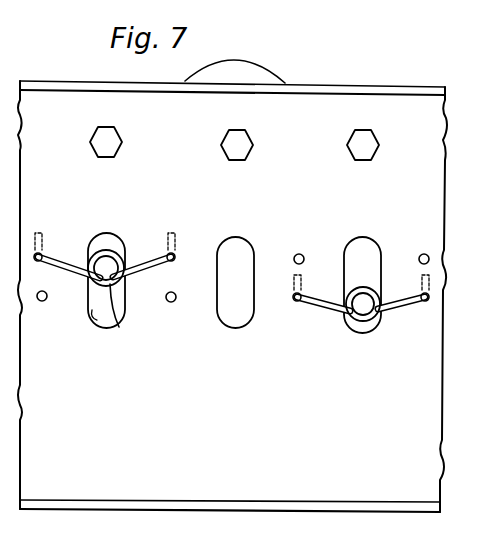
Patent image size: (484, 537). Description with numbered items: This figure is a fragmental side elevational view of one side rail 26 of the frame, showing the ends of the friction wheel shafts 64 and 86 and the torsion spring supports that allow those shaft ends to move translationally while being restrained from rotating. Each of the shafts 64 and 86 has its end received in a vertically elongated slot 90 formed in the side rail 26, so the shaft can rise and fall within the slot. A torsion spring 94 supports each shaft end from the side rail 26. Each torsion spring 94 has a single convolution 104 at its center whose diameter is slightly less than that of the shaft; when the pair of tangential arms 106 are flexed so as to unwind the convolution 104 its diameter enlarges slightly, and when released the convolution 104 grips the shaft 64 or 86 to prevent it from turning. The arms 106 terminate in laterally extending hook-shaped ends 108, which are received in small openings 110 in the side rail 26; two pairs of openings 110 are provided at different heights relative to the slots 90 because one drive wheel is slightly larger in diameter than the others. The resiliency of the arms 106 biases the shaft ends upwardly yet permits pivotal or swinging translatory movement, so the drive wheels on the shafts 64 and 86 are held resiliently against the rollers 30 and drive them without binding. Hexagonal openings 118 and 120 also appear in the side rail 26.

The side rail 26 is at (226, 446).
The rollers 30 is at (252, 70).
The hexagonal opening 120 is at (363, 130).
The hexagonal opening 118 is at (248, 148).
The shaft 86 is at (108, 268).
The vertically elongated slot 90 is at (95, 320).
The torsion spring 94 is at (119, 327).
The openings 110 is at (172, 302).
The convolution 104 is at (365, 300).
The tangential arms 106 is at (400, 310).
The hook-shaped ends 108 is at (303, 283).
The shaft 64 is at (358, 309).